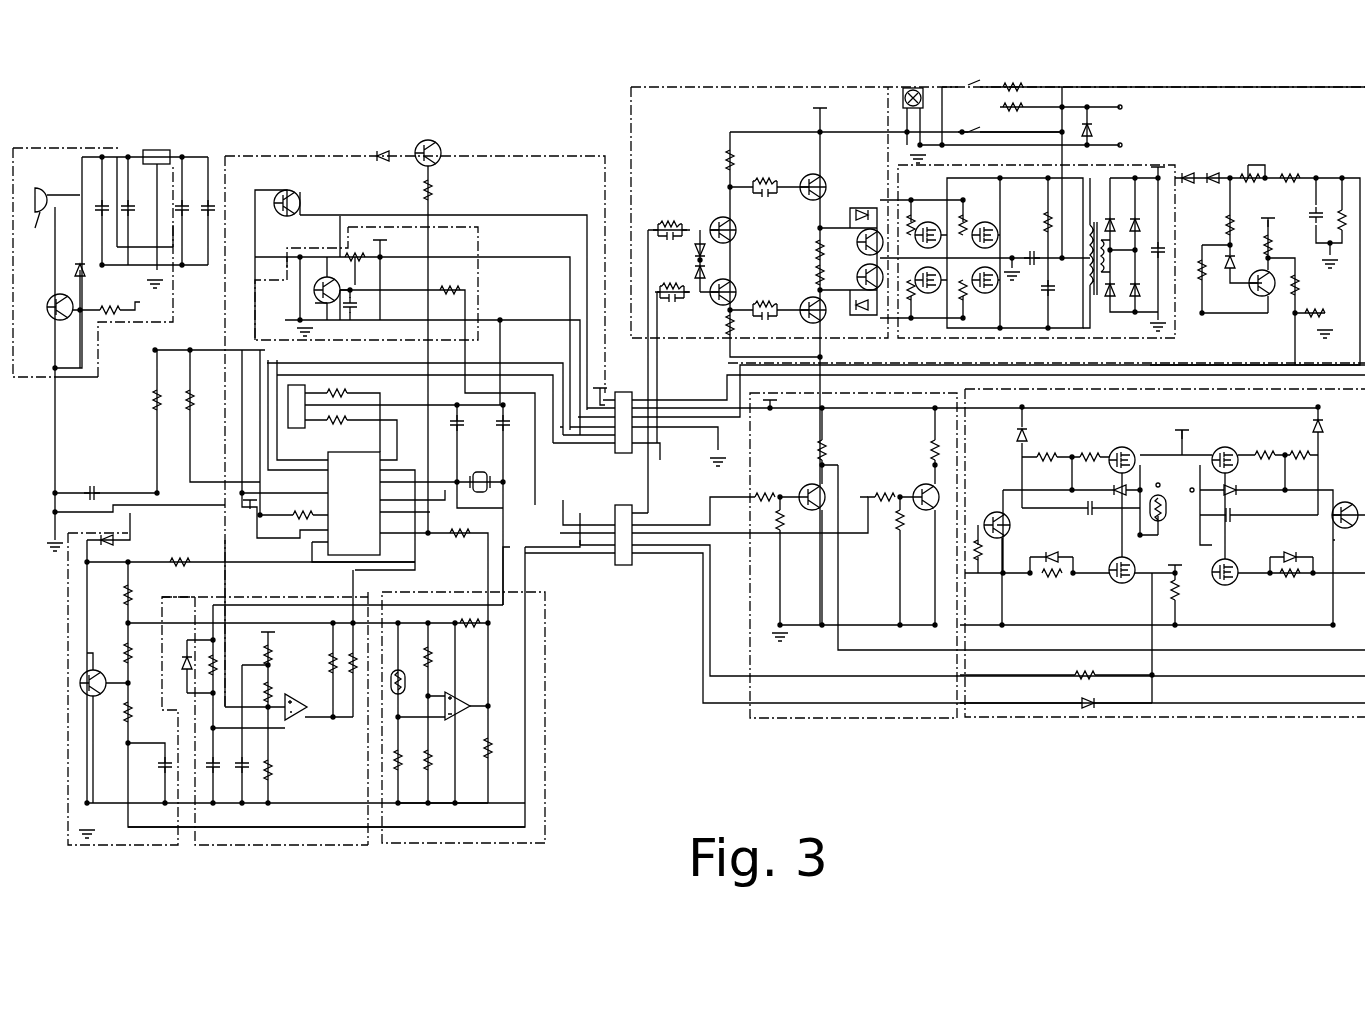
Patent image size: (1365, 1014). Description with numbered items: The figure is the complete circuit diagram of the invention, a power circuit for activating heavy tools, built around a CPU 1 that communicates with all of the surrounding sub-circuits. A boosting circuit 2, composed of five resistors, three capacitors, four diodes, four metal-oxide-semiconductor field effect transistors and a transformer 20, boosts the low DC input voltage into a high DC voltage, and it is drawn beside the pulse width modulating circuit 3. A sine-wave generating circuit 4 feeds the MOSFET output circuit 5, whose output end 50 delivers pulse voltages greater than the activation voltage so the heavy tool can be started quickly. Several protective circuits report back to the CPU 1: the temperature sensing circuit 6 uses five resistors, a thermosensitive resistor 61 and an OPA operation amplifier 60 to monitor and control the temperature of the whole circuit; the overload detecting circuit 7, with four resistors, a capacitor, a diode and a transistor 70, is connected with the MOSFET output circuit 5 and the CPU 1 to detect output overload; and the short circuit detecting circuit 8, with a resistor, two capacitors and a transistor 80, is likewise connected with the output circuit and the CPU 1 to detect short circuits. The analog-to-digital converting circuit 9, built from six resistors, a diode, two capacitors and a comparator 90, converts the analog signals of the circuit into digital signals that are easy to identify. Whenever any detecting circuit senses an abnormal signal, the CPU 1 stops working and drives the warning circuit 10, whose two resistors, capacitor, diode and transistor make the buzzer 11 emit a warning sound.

The CPU 1 is at (350, 535).
The boosting circuit 2 is at (1185, 250).
The pulse width modulating (PWM) circuit 3 is at (603, 117).
The sine-wave generating circuit 4 is at (830, 710).
The MOSFET output circuit 5 is at (1283, 697).
The temperature sensing circuit 6 is at (540, 698).
The overload detecting circuit 7 is at (73, 730).
The short circuit detecting circuit 8 is at (465, 237).
The analog-to-digital converting circuit (ADC) 9 is at (257, 840).
The warning circuit 10 is at (60, 160).
The buzzer 11 is at (38, 217).
The transformer 20 is at (1093, 227).
The output end 50 is at (1173, 487).
The OPA operation amplifier 60 is at (463, 712).
The thermosensitive resistor 61 is at (405, 678).
The transistor 70 is at (97, 670).
The transistor 80 is at (315, 287).
The comparator 90 is at (300, 723).